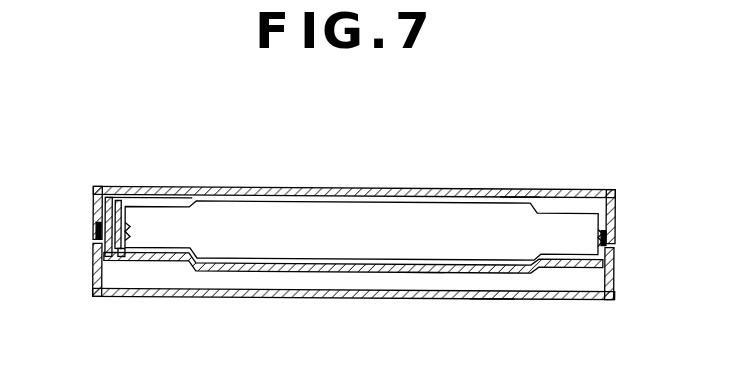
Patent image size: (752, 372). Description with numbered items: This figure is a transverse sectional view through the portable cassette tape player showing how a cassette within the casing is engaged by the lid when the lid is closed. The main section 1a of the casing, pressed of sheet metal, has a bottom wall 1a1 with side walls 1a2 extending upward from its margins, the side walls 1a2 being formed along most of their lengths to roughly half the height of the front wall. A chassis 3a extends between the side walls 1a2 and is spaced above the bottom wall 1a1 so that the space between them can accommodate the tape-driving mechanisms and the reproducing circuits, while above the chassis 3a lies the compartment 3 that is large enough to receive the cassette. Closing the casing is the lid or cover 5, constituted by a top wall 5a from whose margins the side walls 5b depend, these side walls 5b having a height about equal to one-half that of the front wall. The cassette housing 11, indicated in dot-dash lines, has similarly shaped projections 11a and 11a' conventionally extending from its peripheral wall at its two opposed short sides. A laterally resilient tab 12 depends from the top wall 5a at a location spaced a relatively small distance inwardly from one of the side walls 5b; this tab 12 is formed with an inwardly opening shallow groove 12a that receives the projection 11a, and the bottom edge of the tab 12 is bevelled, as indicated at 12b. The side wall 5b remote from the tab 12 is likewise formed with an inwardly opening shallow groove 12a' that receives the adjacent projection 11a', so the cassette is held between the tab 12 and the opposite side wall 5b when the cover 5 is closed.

The main section of casing 1a is at (323, 299).
The bottom wall 1a1 is at (493, 299).
The side walls 1a2 is at (633, 264).
The compartment 3 is at (543, 192).
The chassis 3a is at (421, 274).
The lid or cover 5 is at (453, 189).
The top wall 5a is at (512, 190).
The side walls 5b is at (95, 205).
The cassette housing 11 is at (193, 188).
The projection 11a is at (158, 193).
The projection 11a' is at (580, 199).
The laterally resilient tab 12 is at (113, 196).
The inwardly opening shallow groove 12a is at (66, 209).
The inwardly opening shallow groove 12a' is at (631, 202).
The bevelled bottom edge 12b is at (126, 258).